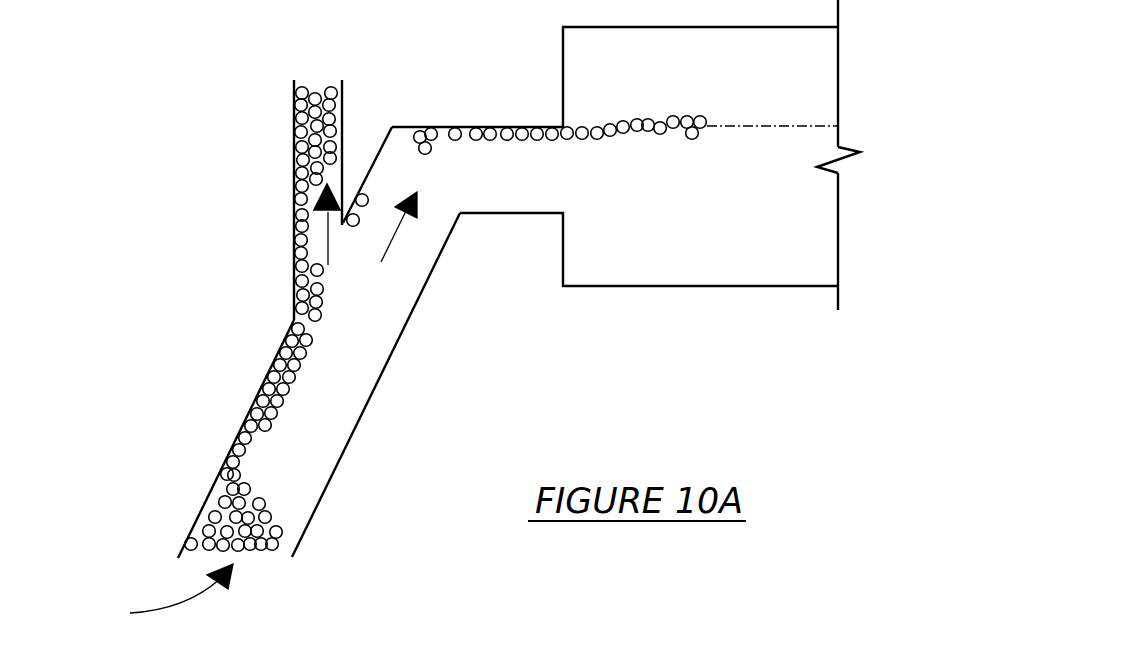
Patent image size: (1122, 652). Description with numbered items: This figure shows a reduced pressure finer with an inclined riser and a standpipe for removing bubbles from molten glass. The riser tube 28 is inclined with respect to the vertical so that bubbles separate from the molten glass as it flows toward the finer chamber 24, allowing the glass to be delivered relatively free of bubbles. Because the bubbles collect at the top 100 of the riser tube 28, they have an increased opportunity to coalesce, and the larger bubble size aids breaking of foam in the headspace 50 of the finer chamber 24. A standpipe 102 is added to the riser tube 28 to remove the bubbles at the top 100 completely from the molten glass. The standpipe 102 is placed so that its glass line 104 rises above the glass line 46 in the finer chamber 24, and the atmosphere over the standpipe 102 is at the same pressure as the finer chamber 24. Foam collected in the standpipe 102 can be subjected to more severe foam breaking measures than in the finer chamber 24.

The finer chamber 24 is at (672, 287).
The riser tube 28 is at (403, 343).
The glass line 46 is at (783, 125).
The headspace 50 is at (684, 81).
The top of the riser tube 100 is at (257, 397).
The standpipe 102 is at (293, 206).
The glass line 104 is at (317, 85).